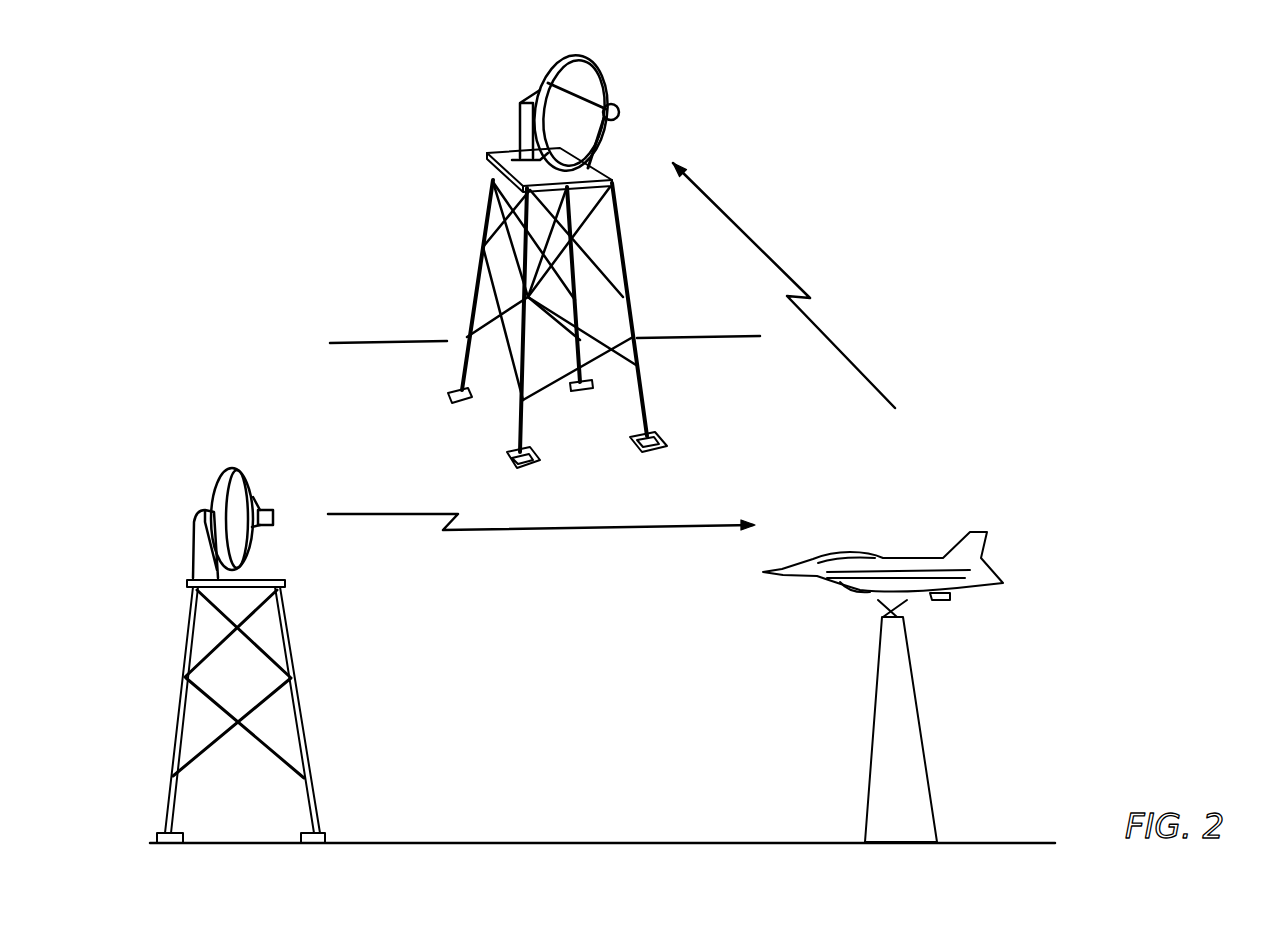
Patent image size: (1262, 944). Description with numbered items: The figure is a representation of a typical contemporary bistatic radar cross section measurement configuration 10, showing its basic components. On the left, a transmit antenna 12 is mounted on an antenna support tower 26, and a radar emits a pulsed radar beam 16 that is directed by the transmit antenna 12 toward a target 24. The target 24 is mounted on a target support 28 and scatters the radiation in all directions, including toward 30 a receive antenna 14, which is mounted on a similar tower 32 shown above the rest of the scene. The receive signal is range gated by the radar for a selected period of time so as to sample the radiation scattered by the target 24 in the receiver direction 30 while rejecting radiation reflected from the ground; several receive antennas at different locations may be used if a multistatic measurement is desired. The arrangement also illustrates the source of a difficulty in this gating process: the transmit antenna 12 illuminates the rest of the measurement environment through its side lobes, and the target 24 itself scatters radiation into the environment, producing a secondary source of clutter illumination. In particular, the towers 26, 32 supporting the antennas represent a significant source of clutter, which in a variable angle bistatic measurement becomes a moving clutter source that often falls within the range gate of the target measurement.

The bistatic RCS measurement configuration 10 is at (985, 396).
The transmit antenna 12 is at (230, 467).
The receive antenna 14 is at (540, 74).
The pulsed radar beam 16 is at (547, 530).
The target 24 is at (985, 546).
The antenna support tower 26 is at (305, 724).
The target support 28 is at (925, 755).
The receiver direction 30 is at (781, 267).
The tower 32 is at (486, 228).